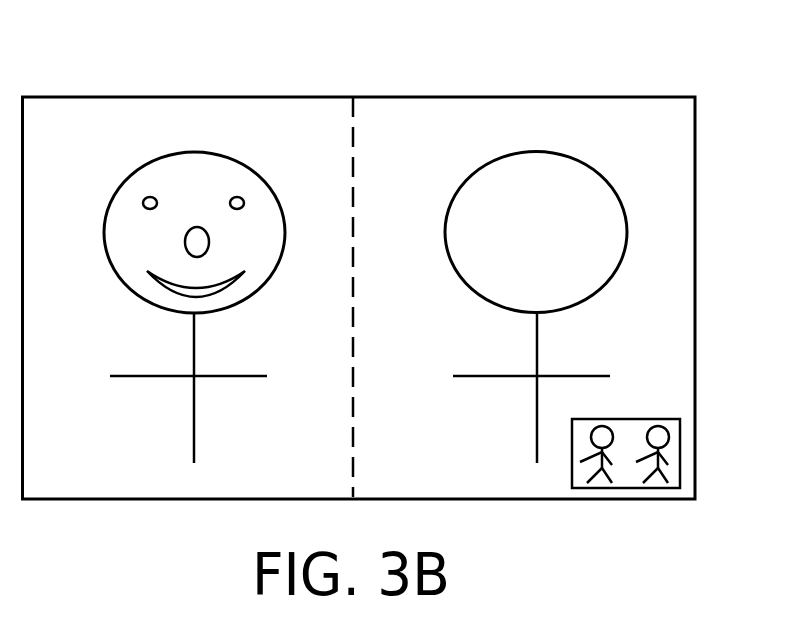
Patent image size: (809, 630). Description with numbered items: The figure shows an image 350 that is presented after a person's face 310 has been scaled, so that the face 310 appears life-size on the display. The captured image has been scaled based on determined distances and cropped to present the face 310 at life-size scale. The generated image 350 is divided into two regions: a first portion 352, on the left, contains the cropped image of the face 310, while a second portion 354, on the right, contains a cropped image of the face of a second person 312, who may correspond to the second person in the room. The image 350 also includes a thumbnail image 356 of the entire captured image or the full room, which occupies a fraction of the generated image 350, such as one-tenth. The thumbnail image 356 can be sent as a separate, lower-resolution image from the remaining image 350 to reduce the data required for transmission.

The face 310 is at (98, 208).
The face of a second person 312 is at (623, 172).
The image 350 is at (228, 97).
The first portion 352 is at (92, 484).
The second portion 354 is at (412, 484).
The thumbnail image 356 is at (680, 452).